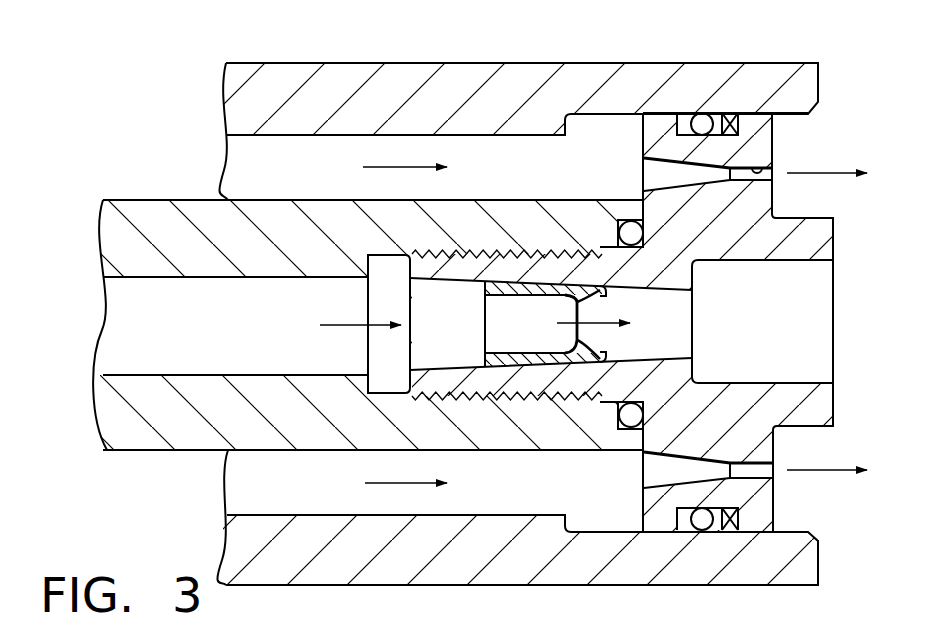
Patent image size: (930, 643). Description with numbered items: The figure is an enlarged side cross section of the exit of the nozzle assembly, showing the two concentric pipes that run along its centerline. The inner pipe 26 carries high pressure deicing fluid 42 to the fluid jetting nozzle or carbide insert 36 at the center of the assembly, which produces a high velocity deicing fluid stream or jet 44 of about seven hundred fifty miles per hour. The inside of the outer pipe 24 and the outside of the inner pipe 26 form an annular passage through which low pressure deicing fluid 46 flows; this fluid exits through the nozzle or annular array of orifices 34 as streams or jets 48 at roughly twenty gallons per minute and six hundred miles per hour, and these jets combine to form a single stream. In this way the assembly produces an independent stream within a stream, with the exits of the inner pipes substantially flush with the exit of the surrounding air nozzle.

The outer pipe 24 is at (243, 109).
The inner pipe 26 is at (205, 212).
The annular array of orifices 34 is at (760, 168).
The carbide insert 36 is at (588, 352).
The deicing fluid 42 is at (348, 323).
The high velocity deicing fluid stream 44 is at (602, 322).
The deicing fluid 46 is at (393, 165).
The streams or jets 48 is at (808, 175).